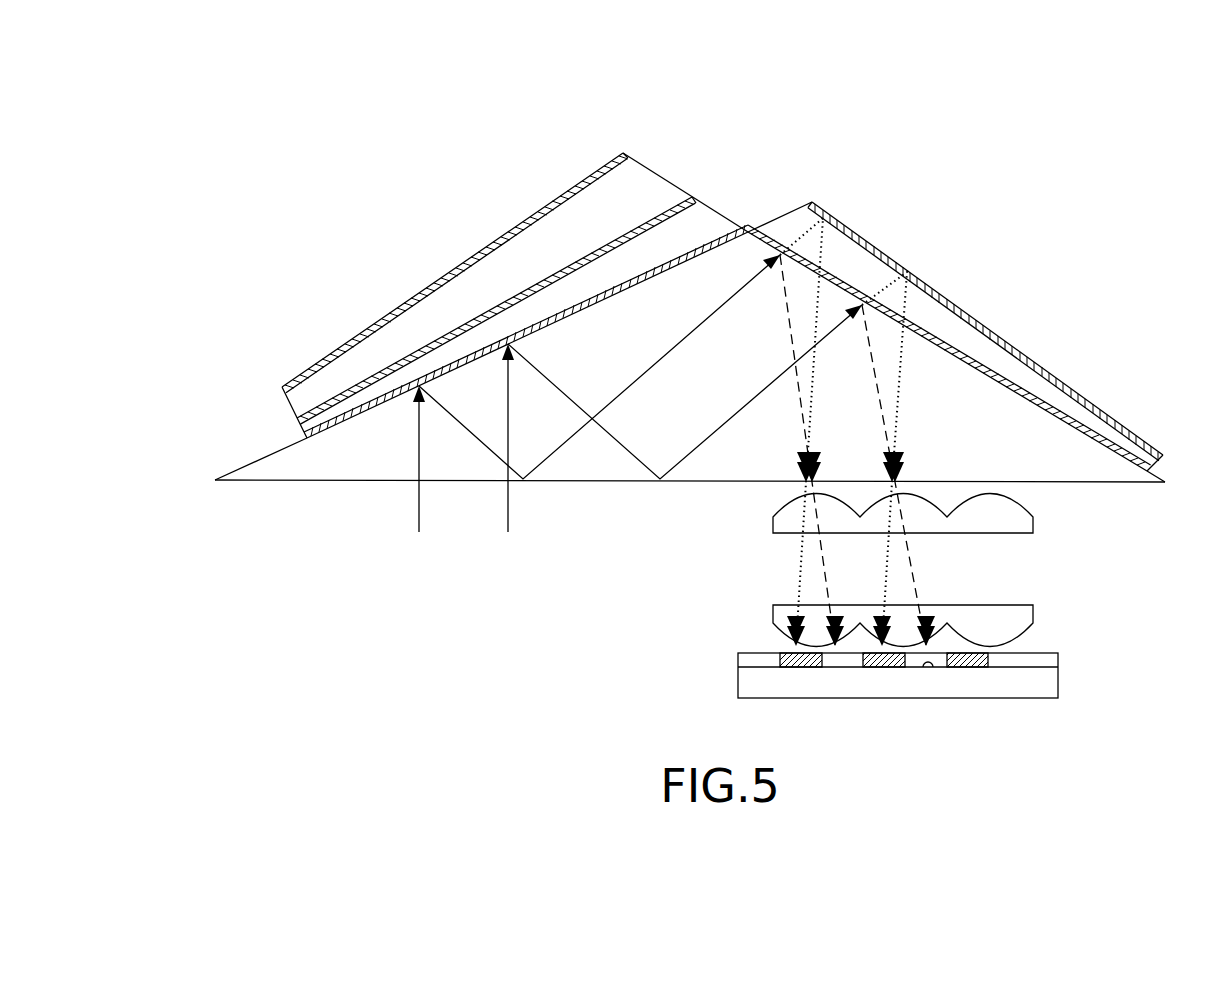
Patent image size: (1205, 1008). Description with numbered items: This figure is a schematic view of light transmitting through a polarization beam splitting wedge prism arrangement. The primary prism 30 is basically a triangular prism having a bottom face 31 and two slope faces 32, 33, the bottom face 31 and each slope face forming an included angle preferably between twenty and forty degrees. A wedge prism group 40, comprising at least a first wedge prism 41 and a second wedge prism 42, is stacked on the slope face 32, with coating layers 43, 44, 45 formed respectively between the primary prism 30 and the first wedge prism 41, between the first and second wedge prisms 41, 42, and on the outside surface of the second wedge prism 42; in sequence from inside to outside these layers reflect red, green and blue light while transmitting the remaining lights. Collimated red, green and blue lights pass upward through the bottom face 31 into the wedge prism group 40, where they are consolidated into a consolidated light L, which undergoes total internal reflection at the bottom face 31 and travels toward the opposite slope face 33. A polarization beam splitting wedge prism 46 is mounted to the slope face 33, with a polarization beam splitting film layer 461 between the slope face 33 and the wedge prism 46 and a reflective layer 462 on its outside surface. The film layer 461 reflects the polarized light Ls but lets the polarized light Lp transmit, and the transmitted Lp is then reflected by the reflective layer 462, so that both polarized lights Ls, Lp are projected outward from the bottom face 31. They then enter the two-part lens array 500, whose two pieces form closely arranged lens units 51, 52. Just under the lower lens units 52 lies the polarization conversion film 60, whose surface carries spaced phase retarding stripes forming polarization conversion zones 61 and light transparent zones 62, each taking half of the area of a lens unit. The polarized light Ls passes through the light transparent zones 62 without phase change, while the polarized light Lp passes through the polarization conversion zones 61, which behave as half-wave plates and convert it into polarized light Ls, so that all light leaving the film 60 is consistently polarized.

The primary prism 30 is at (654, 443).
The bottom face 31 is at (1115, 484).
The slope face 32 is at (265, 452).
The slope face 33 is at (1093, 440).
The wedge prism group 40 is at (722, 297).
The first wedge prism 41 is at (643, 248).
The second wedge prism 42 is at (537, 235).
The coating layer 43 is at (363, 408).
The coating layer 44 is at (407, 355).
The coating layer 45 is at (465, 278).
The polarization beam splitting wedge prism 46 is at (955, 302).
The polarization beam splitting film layer 461 is at (993, 383).
The reflective layer 462 is at (953, 313).
The lens units 51 is at (773, 497).
The lens units 52 is at (775, 632).
The two-part lens array 500 is at (909, 569).
The polarization conversion film 60 is at (940, 706).
The polarization conversion zones 61 is at (975, 667).
The light transparent zones 62 is at (925, 667).
The consolidated light L is at (610, 437).
The polarized light Ls is at (797, 350).
The polarized light Lp is at (897, 430).